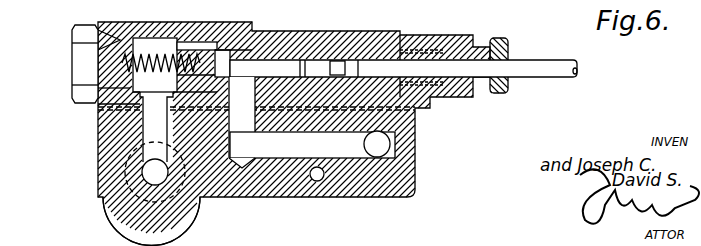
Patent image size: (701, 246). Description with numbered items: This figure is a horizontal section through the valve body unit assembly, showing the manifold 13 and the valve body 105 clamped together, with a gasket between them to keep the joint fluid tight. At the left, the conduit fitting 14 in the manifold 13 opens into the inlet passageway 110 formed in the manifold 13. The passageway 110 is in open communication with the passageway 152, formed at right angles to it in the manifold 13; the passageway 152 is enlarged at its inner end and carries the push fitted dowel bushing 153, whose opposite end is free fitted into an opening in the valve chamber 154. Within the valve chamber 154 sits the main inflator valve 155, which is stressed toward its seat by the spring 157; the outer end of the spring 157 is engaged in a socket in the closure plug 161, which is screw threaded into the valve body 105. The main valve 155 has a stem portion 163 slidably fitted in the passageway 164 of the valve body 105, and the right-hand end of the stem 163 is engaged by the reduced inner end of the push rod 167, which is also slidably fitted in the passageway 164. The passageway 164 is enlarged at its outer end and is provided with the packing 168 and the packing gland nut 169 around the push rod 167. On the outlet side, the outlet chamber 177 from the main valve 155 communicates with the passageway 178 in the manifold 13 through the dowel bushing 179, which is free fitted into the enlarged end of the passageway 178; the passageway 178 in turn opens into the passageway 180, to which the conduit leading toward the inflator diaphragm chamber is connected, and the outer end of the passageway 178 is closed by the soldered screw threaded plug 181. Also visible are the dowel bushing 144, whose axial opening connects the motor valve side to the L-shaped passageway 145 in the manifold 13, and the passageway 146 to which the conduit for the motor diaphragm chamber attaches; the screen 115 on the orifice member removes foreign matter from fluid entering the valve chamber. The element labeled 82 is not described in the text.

The manifold 13 is at (98, 166).
The conduit fitting 14 is at (118, 214).
The valve body 82 is at (366, 62).
The valve body 105 is at (122, 30).
The passageway 110 is at (162, 182).
The screen 115 is at (184, 42).
The dowel bushing 144 is at (215, 48).
The L-shaped passageway 145 is at (222, 50).
The passageway 146 is at (319, 182).
The passageway 152 is at (162, 150).
The dowel bushing 153 is at (133, 122).
The valve chamber 154 is at (110, 86).
The main inflator valve 155 is at (248, 56).
The spring 157 is at (153, 52).
The closure plug 161 is at (74, 56).
The stem portion 163 is at (285, 68).
The passageway 164 is at (340, 62).
The push rod 167 is at (553, 72).
The packing 168 is at (421, 50).
The packing gland nut 169 is at (498, 95).
The outlet chamber 177 is at (257, 112).
The passageway 178 is at (245, 117).
The dowel bushing 179 is at (242, 166).
The passageway 180 is at (379, 157).
The screw threaded plug 181 is at (417, 136).